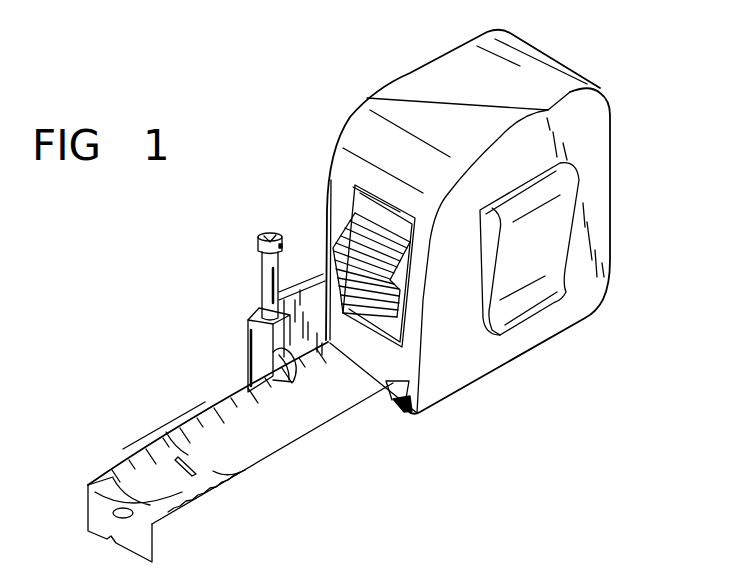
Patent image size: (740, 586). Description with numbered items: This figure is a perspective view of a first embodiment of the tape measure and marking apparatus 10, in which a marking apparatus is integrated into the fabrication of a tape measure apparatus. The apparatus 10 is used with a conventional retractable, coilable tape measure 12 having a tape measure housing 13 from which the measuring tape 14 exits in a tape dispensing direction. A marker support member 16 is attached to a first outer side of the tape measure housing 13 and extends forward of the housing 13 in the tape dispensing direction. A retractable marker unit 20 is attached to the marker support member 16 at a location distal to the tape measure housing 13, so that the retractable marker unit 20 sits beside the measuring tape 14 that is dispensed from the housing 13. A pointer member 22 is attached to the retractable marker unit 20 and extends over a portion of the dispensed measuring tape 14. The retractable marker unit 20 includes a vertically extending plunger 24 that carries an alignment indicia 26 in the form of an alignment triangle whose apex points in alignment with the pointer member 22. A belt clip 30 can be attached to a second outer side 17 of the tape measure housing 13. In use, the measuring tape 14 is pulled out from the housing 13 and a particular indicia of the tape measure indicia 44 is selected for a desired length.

The tape measure and marking apparatus 10 is at (283, 168).
The tape measure 12 is at (594, 78).
The tape measure housing 13 is at (433, 85).
The measuring tape 14 is at (282, 451).
The marker support member 16 is at (290, 276).
The second outer side 17 is at (583, 145).
The retractable marker unit 20 is at (245, 336).
The pointer member 22 is at (275, 370).
The plunger 24 is at (266, 278).
The alignment indicia 26 is at (258, 235).
The belt clip 30 is at (547, 238).
The tape measure indicia 44 is at (160, 425).